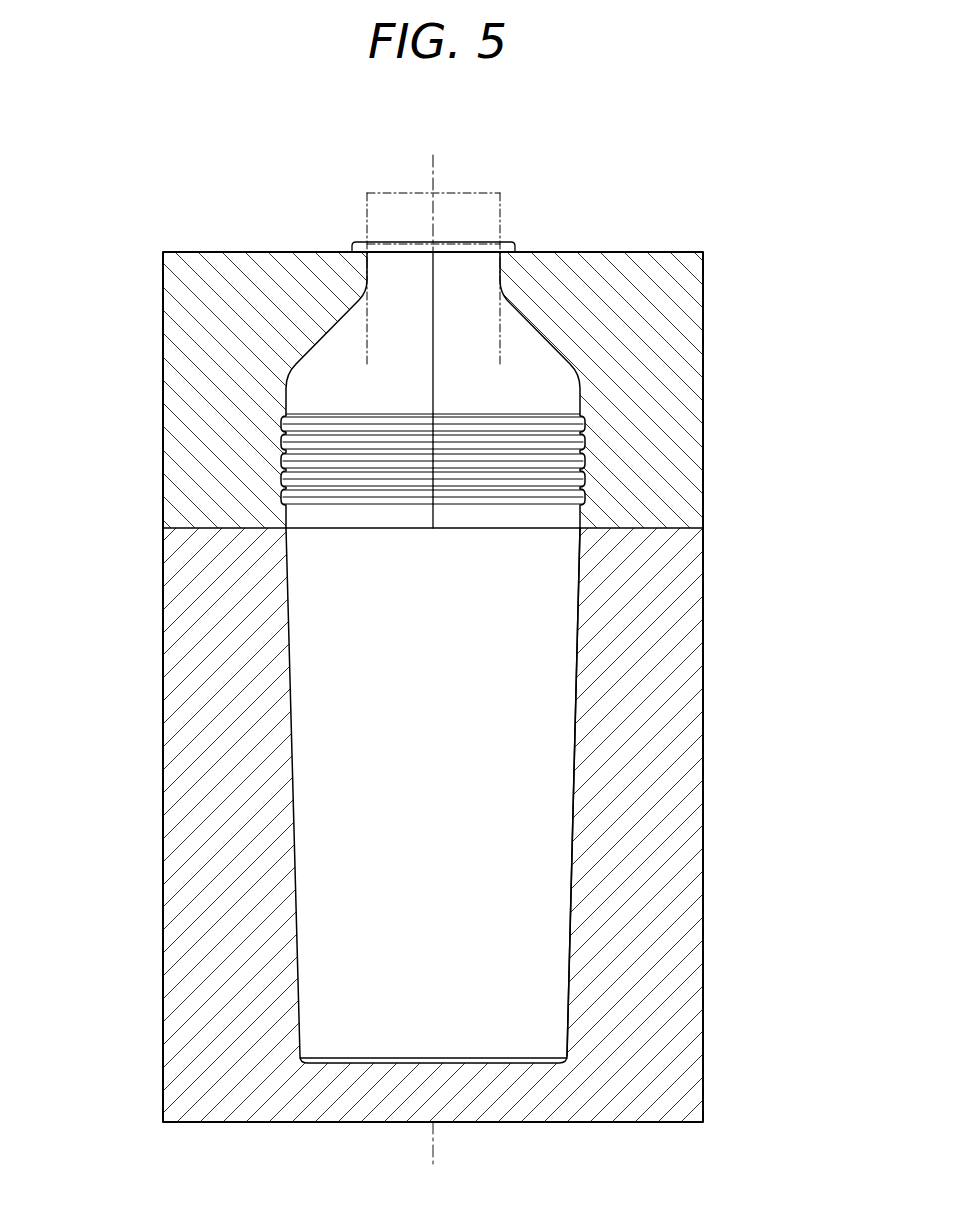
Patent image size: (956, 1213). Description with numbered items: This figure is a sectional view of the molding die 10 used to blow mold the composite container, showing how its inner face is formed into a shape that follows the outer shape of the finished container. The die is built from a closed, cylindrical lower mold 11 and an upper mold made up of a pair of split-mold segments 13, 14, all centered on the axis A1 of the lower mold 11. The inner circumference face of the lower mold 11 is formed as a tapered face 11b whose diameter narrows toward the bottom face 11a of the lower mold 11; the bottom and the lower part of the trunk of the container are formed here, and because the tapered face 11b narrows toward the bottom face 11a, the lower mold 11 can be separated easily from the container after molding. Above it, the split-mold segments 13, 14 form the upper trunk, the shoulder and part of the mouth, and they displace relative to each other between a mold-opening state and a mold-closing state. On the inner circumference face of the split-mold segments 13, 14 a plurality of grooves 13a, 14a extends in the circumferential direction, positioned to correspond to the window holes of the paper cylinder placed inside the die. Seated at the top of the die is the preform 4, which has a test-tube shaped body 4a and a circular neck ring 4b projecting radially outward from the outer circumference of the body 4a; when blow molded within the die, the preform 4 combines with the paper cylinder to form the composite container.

The molding die 10 is at (706, 210).
The lower mold 11 is at (677, 997).
The bottom face 11a is at (478, 1065).
The tapered face 11b is at (572, 787).
The split-mold segment 13 is at (207, 370).
The grooves 13a is at (283, 503).
The split-mold segment 14 is at (672, 388).
The grooves 14a is at (585, 500).
The preform 4 is at (503, 331).
The body 4a is at (465, 193).
The neck ring 4b is at (522, 238).
The axis A1 is at (432, 644).